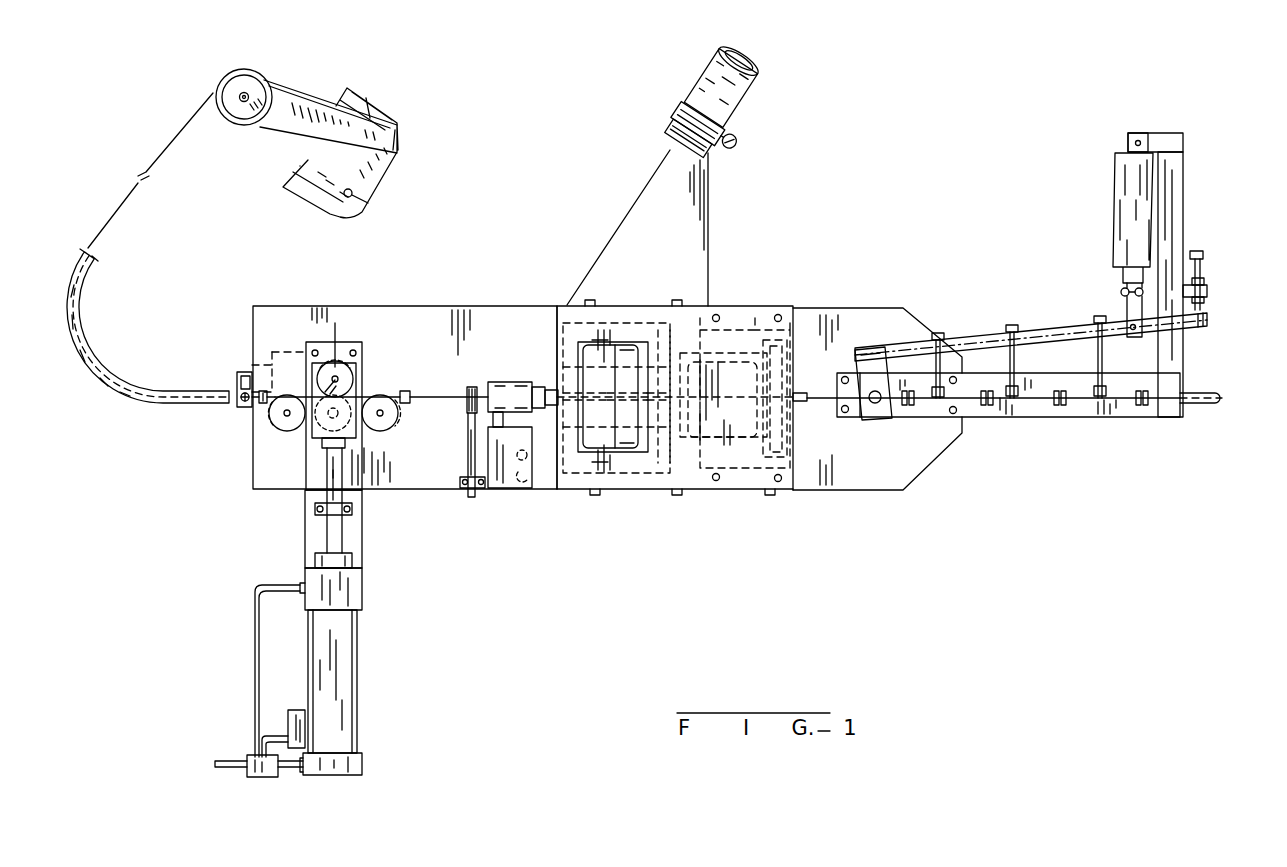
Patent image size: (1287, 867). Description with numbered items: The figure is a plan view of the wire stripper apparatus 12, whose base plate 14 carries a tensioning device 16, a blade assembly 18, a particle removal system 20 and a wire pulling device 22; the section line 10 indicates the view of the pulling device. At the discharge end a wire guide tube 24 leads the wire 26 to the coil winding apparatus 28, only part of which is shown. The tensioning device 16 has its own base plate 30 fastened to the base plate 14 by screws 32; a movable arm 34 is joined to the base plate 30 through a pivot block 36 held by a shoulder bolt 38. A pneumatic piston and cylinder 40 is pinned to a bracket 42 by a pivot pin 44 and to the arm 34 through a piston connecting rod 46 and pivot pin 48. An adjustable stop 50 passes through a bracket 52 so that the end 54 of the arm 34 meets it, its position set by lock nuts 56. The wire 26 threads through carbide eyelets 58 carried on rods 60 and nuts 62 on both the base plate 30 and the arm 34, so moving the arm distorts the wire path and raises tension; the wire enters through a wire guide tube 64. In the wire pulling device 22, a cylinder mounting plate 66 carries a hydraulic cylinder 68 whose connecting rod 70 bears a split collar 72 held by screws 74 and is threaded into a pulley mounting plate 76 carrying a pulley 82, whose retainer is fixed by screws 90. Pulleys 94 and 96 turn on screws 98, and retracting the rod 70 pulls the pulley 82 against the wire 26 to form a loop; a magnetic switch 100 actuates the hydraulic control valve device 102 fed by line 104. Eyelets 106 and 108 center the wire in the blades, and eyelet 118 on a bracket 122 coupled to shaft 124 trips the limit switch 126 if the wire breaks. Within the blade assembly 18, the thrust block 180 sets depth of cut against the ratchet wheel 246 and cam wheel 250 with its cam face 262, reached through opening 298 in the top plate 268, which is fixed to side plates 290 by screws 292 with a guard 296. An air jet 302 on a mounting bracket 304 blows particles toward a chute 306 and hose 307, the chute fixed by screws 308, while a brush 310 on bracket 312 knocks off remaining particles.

The section line 10 is at (335, 330).
The wire stripper apparatus 12 is at (778, 290).
The base plate 14 is at (880, 307).
The tensioning device 16 is at (1127, 430).
The blade assembly 18 is at (660, 494).
The particle removal system 20 is at (505, 494).
The wire pulling device 22 is at (258, 494).
The wire guide tube 24 is at (110, 374).
The wire 26 is at (120, 207).
The coil winding apparatus 28 is at (199, 75).
The base plate 30 is at (1064, 421).
The screws 32 is at (843, 377).
The movable arm 34 is at (985, 337).
The pivot block 36 is at (889, 421).
The shoulder bolt 38 is at (873, 404).
The pneumatic piston and cylinder 40 is at (1126, 173).
The bracket 42 is at (1184, 172).
The pivot pin 44 is at (1139, 140).
The piston connecting rod 46 is at (1124, 293).
The pivot pin 48 is at (1130, 325).
The adjustable stop 50 is at (1197, 252).
The bracket 52 is at (1208, 292).
The end of arm 54 is at (1206, 320).
The lock nuts 56 is at (1201, 282).
The carbide eyelets 58 is at (1012, 386).
The rods 60 is at (934, 340).
The nuts 62 is at (939, 338).
The wire guide tubes 64 is at (1215, 393).
The cylinder mounting plate 66 is at (364, 546).
The hydraulic cylinder 68 is at (360, 660).
The connecting rod 70 is at (330, 540).
The split collar 72 is at (338, 516).
The screws 74 is at (316, 509).
The pulley mounting plate 76 is at (310, 435).
The pulley 82 is at (352, 366).
The screws 90 is at (353, 349).
The pulley 94 is at (283, 416).
The pulley 96 is at (388, 428).
The screws 98 is at (326, 420).
The magnetic switch 100 is at (288, 712).
The hydraulic control valve device 102 is at (270, 777).
The line 104 is at (232, 768).
The eyelet 106 is at (262, 404).
The eyelet 108 is at (406, 392).
The eyelet 118 is at (242, 390).
The bracket 122 is at (240, 372).
The shaft 124 is at (248, 365).
The limit switch 126 is at (272, 352).
The thrust block 180 is at (686, 348).
The ratchet wheel 246 is at (600, 357).
The cam wheel 250 is at (633, 444).
The cam face 262 is at (636, 346).
The top plate 268 is at (690, 478).
The side plates 290 is at (758, 330).
The screws 292 is at (718, 314).
The guard 296 is at (615, 493).
The opening 298 is at (656, 305).
The air jet 302 is at (500, 384).
The mounting bracket 304 is at (515, 470).
The chute 306 is at (663, 141).
The hose 307 is at (708, 70).
The screws 308 is at (590, 299).
The brush 310 is at (466, 450).
The bracket 312 is at (462, 491).